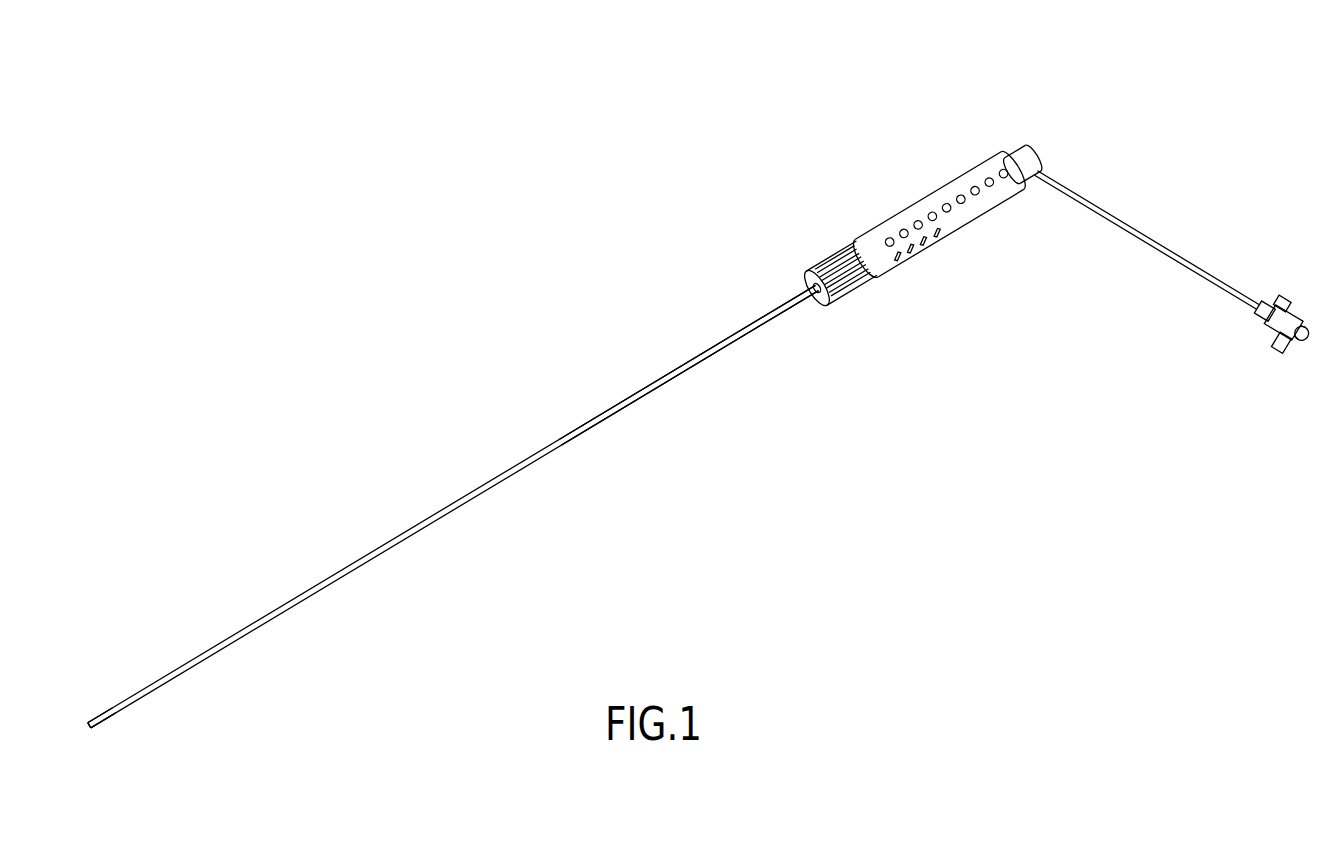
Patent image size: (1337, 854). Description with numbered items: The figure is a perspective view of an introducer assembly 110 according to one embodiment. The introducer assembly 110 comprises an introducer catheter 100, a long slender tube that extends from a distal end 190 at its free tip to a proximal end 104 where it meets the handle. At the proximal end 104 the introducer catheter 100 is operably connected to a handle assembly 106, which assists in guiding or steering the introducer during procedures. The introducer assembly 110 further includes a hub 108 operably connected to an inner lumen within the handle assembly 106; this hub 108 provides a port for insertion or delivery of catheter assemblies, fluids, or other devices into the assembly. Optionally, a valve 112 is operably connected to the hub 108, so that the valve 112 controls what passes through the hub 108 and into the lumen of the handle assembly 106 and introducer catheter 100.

The introducer catheter 100 is at (512, 452).
The proximal end 104 is at (857, 300).
The handle assembly 106 is at (911, 187).
The hub 108 is at (1040, 160).
The introducer assembly 110 is at (735, 272).
The valve 112 is at (1292, 308).
The distal end 190 is at (88, 700).